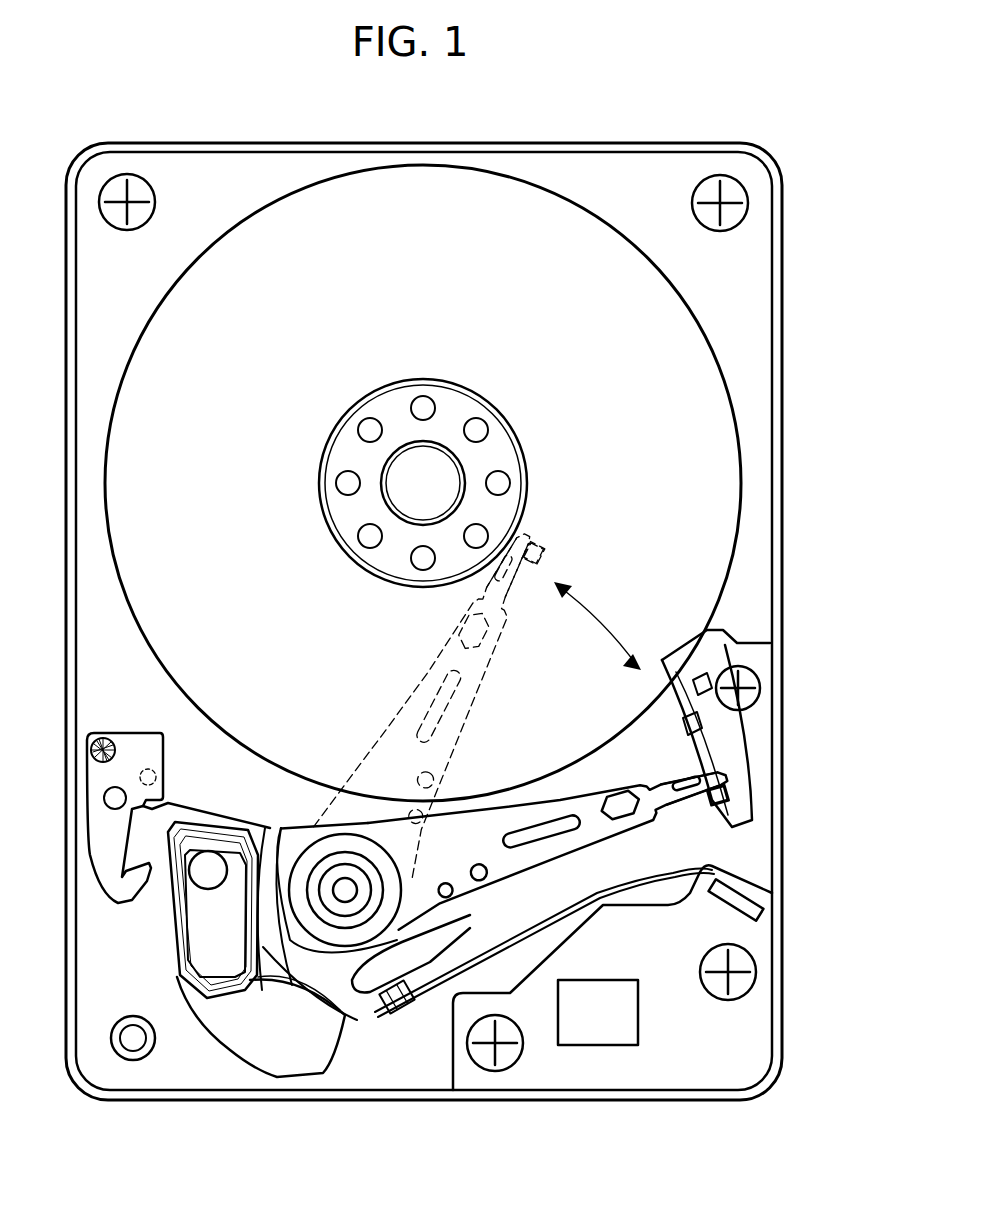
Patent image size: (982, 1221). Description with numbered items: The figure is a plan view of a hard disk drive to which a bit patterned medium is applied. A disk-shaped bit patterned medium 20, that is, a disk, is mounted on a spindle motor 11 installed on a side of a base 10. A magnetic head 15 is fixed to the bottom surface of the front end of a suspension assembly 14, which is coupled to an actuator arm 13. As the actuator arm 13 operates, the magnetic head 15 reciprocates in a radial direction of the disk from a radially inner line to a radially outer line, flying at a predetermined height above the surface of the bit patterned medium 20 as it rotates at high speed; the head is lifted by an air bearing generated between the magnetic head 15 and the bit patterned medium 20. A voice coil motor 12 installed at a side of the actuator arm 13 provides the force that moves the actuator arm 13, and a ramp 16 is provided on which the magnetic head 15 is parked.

The base 10 is at (765, 313).
The bit patterned medium 20 is at (735, 482).
The spindle motor 11 is at (457, 405).
The voice coil motor 12 is at (226, 1066).
The actuator arm 13 is at (568, 848).
The suspension assembly 14 is at (672, 805).
The magnetic head 15 is at (547, 523).
The ramp 16 is at (716, 735).